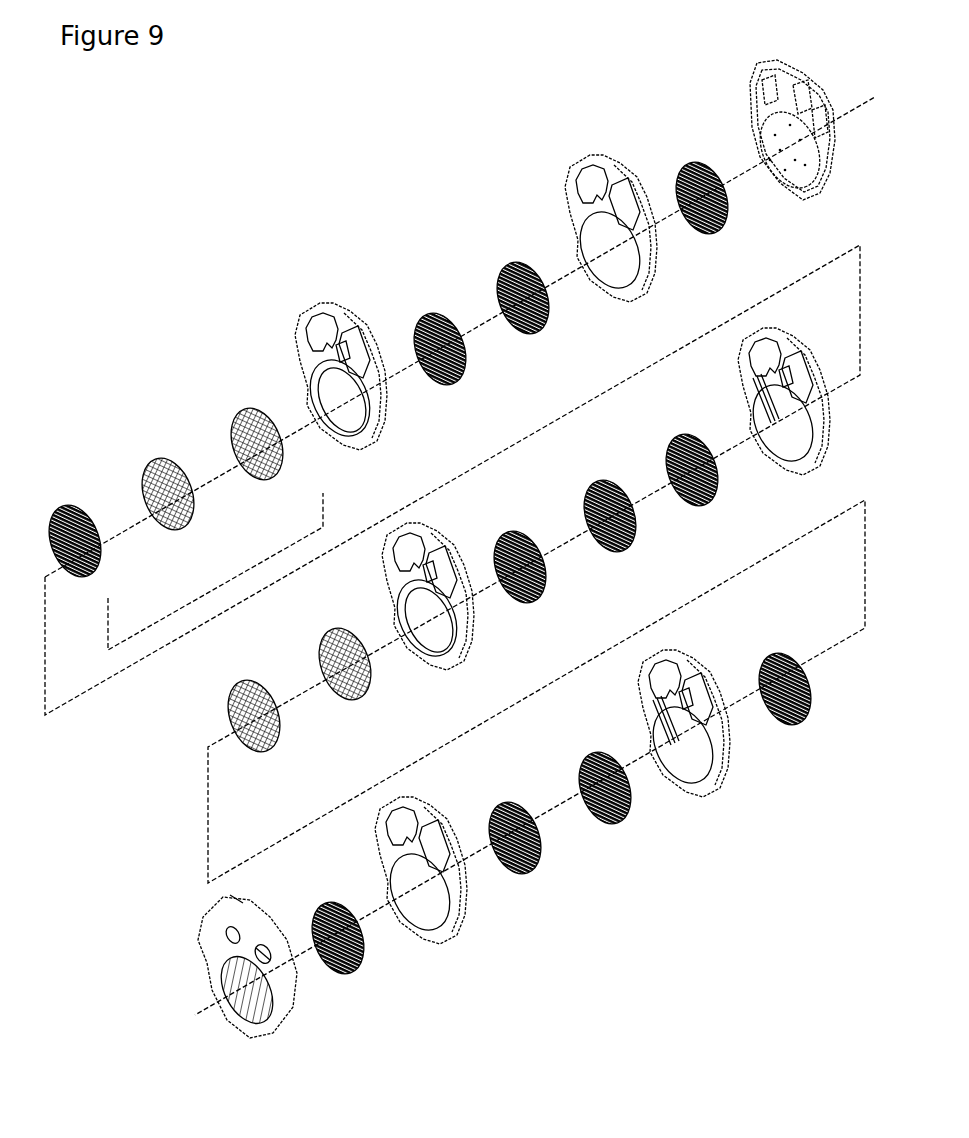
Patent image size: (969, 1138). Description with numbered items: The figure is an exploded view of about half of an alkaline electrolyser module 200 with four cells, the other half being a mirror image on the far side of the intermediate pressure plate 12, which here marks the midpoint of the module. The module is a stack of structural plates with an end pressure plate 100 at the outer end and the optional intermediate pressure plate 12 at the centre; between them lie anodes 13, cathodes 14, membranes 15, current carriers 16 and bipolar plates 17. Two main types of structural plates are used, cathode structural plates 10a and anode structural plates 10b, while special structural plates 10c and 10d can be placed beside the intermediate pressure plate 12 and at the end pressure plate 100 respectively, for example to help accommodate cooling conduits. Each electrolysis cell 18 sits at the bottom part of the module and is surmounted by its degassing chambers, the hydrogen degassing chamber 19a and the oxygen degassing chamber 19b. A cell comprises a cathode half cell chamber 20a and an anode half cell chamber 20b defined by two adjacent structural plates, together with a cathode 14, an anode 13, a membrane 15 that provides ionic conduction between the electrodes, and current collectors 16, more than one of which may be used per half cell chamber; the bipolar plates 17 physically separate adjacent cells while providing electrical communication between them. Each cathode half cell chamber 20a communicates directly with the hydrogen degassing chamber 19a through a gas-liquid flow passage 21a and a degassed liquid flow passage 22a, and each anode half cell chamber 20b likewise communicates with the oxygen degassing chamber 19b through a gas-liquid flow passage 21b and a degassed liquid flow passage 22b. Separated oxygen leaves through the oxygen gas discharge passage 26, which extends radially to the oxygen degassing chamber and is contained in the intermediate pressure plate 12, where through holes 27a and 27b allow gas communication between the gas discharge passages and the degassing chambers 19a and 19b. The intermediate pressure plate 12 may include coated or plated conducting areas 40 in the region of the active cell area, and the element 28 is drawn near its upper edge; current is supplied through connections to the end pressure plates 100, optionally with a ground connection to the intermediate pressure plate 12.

The alkaline electrolyser module 200 is at (460, 556).
The end pressure plate 100 is at (812, 198).
The cathode structural plate 10a is at (795, 468).
The anode structural plate 10b is at (333, 432).
The special structural plate 10c is at (450, 935).
The special structural plate 10d is at (645, 290).
The intermediate pressure plate 12 is at (237, 1027).
The anode 13 is at (280, 470).
The cathode 14 is at (98, 567).
The membrane 15 is at (190, 520).
The current carrier 16 is at (720, 225).
The bipolar plate 17 is at (537, 322).
The electrolysis cell 18 is at (215, 571).
The hydrogen degassing chamber 19a is at (578, 180).
The oxygen degassing chamber 19b is at (626, 195).
The cathode half cell chamber 20a is at (812, 468).
The anode half cell chamber 20b is at (368, 450).
The gas-liquid flow passage 21a is at (790, 363).
The gas-liquid flow passage 21b is at (352, 350).
The degassed liquid flow passage 22a is at (748, 420).
The degassed liquid flow passage 22b is at (385, 425).
The oxygen gas discharge passage 26 is at (236, 897).
The through hole 27a is at (203, 905).
The through hole 27b is at (278, 930).
The hole 28 is at (264, 945).
The hatched region 40 is at (284, 1027).